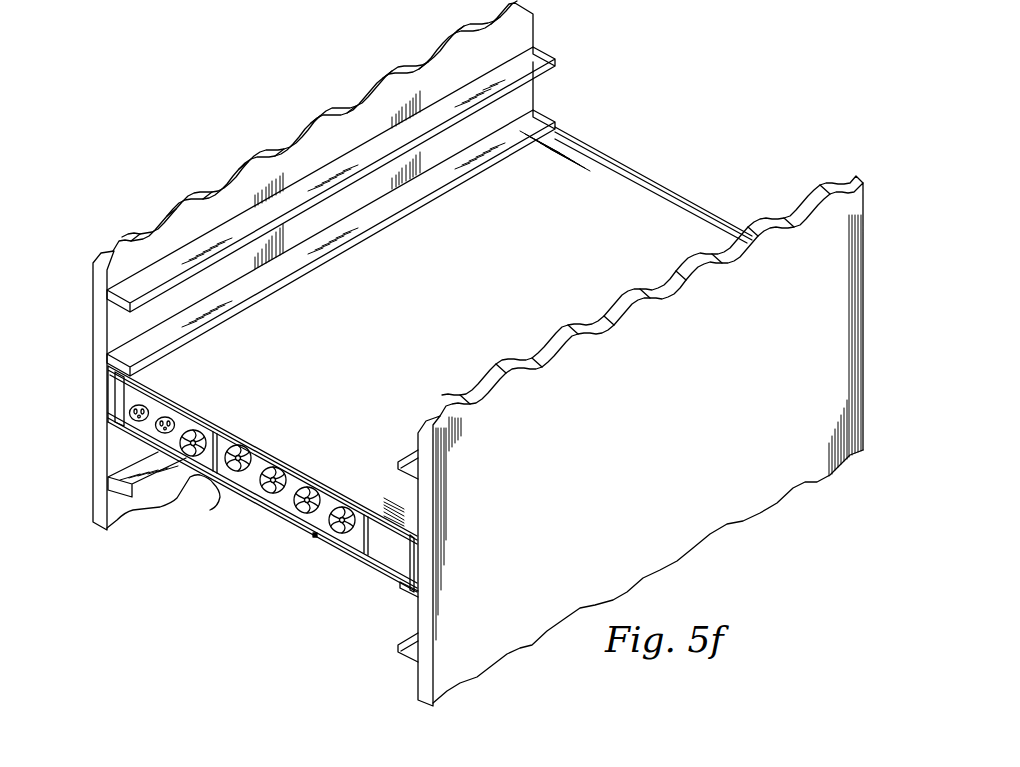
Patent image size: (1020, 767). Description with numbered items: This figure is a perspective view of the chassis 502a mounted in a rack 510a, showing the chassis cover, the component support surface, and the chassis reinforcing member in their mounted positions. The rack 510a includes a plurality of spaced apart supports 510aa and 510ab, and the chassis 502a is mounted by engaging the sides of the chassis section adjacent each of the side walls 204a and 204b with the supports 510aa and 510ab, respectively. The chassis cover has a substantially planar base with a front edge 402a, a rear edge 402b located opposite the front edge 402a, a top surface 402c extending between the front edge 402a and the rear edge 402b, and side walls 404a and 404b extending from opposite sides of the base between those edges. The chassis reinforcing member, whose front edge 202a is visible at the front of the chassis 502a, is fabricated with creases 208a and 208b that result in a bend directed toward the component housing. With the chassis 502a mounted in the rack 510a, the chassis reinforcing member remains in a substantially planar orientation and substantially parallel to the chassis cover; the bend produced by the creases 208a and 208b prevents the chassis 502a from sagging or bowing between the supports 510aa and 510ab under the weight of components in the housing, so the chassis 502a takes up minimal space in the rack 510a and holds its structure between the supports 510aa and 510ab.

The chassis 502a is at (663, 118).
The front edge 402a is at (233, 431).
The rear edge 402b is at (686, 198).
The top surface 402c is at (510, 327).
The side wall 404a is at (107, 382).
The side wall 404b is at (416, 582).
The side wall 204a is at (112, 410).
The side wall 204b is at (413, 548).
The rack 510a is at (698, 528).
The support 510aa is at (130, 437).
The support 510ab is at (413, 587).
The front edge 202a is at (263, 507).
The crease 208a is at (182, 512).
The crease 208b is at (314, 539).